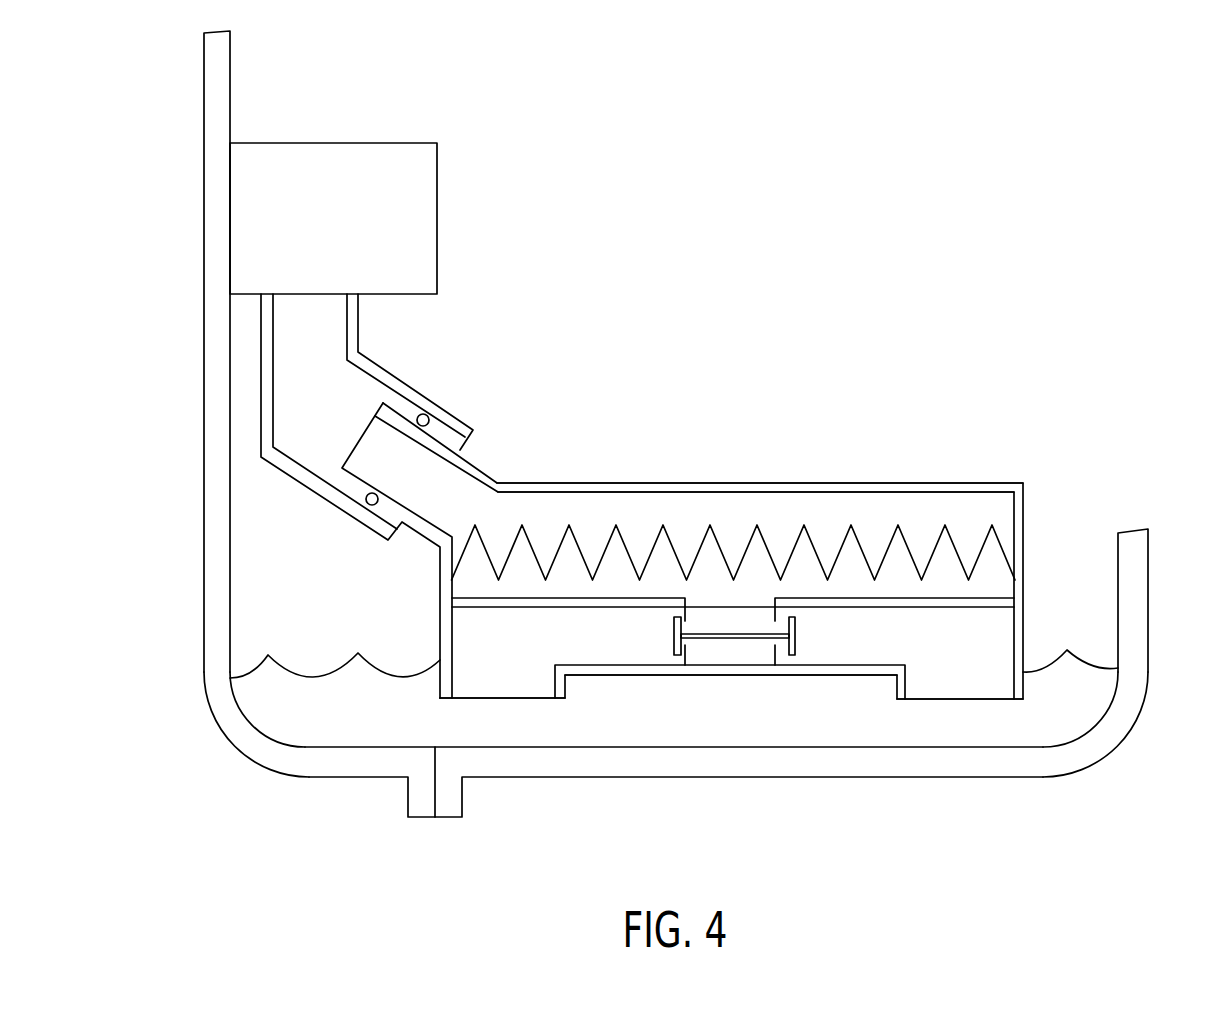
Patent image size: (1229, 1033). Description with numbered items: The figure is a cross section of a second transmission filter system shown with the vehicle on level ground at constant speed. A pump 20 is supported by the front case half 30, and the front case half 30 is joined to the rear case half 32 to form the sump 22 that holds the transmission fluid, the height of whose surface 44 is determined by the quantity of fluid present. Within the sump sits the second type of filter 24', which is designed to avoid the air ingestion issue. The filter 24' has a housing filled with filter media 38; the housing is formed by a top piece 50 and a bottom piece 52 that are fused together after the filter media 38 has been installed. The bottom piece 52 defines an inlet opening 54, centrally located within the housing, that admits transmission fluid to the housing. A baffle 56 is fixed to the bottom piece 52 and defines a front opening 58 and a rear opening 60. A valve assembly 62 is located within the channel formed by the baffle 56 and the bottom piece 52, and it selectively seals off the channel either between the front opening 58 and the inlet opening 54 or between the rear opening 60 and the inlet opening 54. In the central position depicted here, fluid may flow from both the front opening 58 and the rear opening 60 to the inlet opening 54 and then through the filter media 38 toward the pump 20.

The pump 20 is at (429, 212).
The sump 22 is at (325, 727).
The filter 24' is at (642, 468).
The front case half 30 is at (230, 93).
The rear case half 32 is at (1148, 596).
The filter media 38 is at (990, 523).
The surface of transmission fluid 44 is at (1062, 650).
The top piece 50 is at (805, 483).
The bottom piece 52 is at (617, 607).
The inlet opening 54 is at (748, 605).
The baffle 56 is at (858, 675).
The front opening 58 is at (488, 698).
The rear opening 60 is at (972, 700).
The valve assembly 62 is at (732, 637).